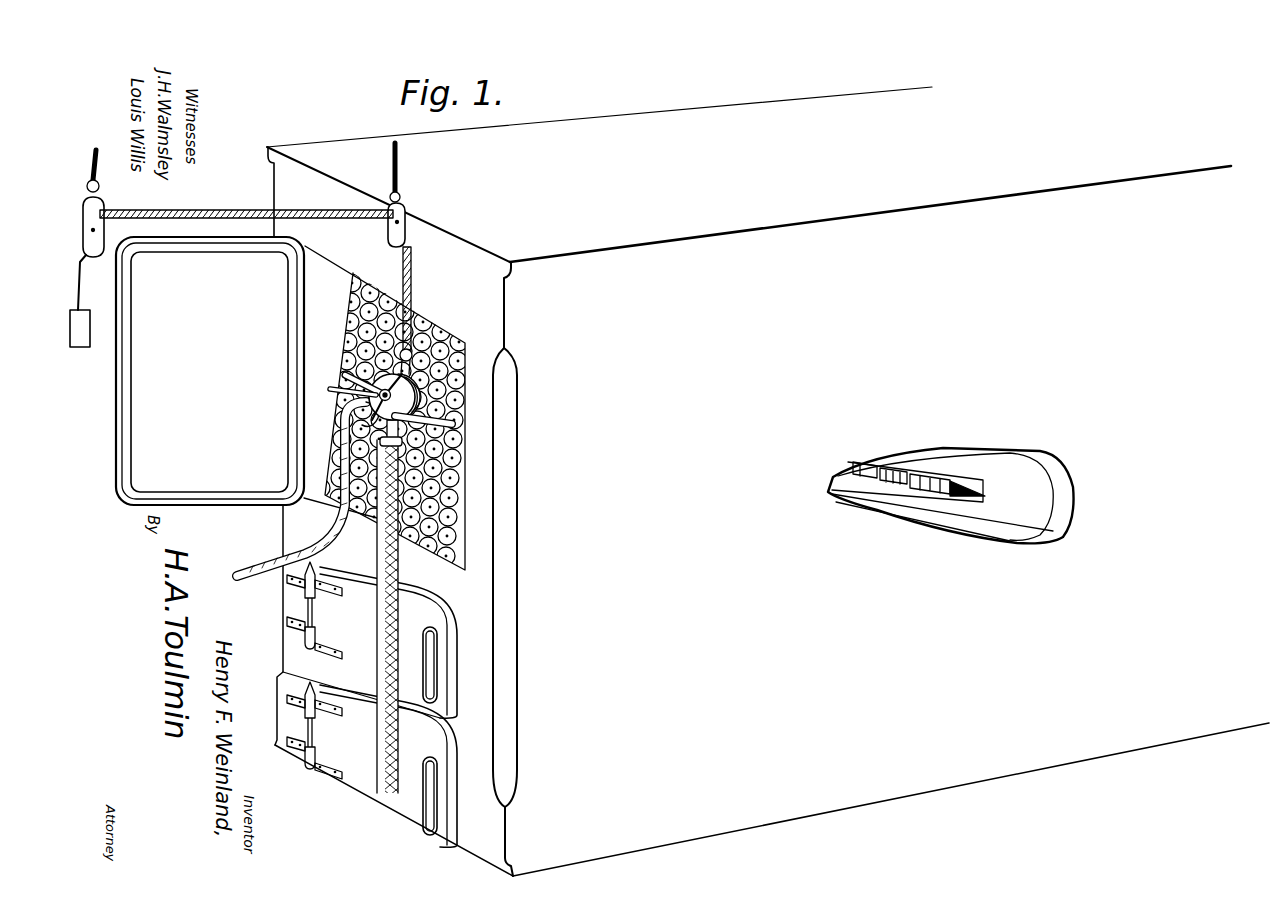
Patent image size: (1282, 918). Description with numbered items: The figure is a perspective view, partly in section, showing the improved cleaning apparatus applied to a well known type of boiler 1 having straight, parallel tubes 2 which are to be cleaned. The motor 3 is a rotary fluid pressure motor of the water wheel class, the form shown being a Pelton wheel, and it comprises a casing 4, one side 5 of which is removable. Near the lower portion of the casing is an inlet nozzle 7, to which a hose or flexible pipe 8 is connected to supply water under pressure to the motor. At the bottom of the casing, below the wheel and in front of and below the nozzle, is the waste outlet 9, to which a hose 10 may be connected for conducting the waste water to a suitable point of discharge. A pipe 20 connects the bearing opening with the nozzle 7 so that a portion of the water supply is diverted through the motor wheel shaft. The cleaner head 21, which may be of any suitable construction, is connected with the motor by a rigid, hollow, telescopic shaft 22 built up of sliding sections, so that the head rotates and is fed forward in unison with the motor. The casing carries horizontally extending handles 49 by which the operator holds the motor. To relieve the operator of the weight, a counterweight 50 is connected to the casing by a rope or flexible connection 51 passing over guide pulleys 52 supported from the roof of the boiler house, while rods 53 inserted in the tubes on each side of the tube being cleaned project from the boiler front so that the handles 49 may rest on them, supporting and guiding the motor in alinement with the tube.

The boiler 1 is at (692, 481).
The tubes 2 is at (443, 316).
The motor 3 is at (428, 382).
The casing 4 is at (432, 393).
The removable side 5 is at (383, 380).
The inlet nozzle 7 is at (367, 427).
The hose or flexible pipe 8 is at (277, 552).
The waste outlet 9 is at (383, 438).
The hose 10 is at (400, 588).
The pipe 20 is at (370, 398).
The cleaner head 21 is at (902, 470).
The shaft 22 is at (863, 462).
The handles 49 is at (347, 375).
The counterweight 50 is at (82, 342).
The rope or flexible connection 51 is at (236, 199).
The guide pulleys 52 is at (408, 215).
The rods 53 is at (343, 390).